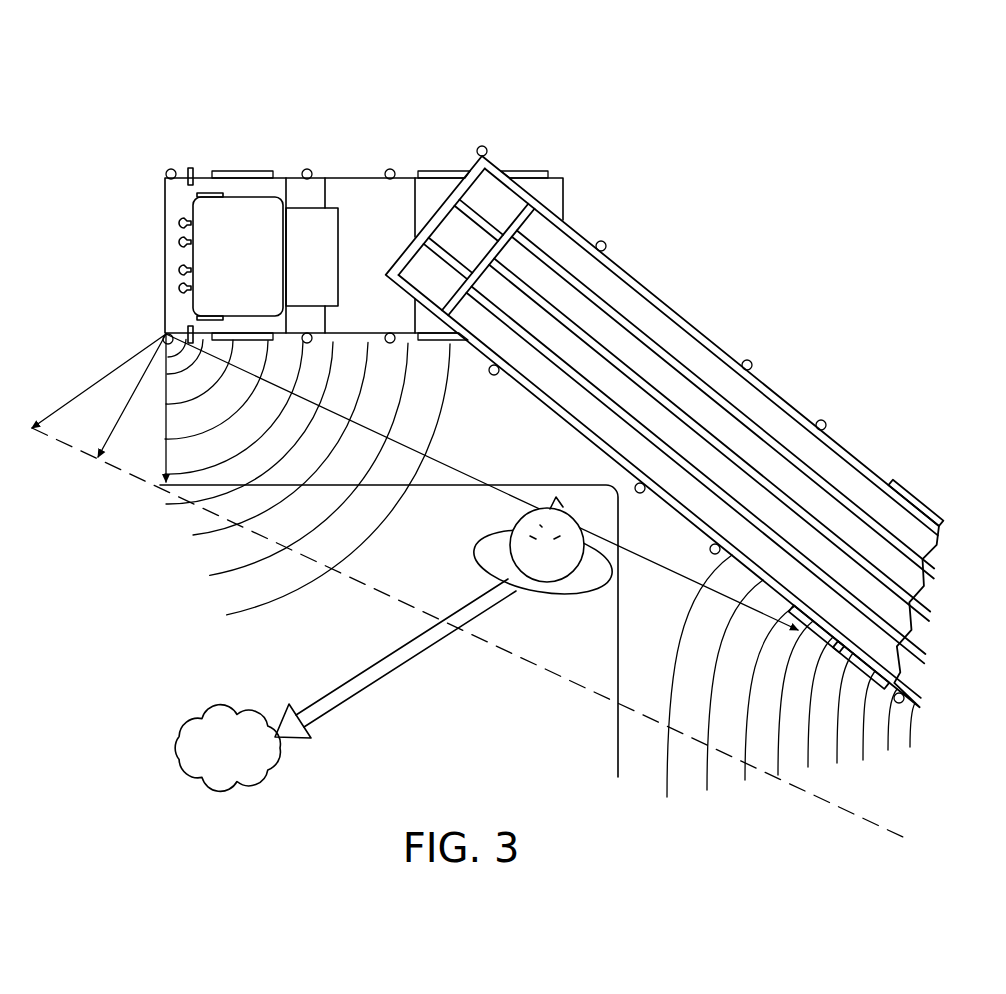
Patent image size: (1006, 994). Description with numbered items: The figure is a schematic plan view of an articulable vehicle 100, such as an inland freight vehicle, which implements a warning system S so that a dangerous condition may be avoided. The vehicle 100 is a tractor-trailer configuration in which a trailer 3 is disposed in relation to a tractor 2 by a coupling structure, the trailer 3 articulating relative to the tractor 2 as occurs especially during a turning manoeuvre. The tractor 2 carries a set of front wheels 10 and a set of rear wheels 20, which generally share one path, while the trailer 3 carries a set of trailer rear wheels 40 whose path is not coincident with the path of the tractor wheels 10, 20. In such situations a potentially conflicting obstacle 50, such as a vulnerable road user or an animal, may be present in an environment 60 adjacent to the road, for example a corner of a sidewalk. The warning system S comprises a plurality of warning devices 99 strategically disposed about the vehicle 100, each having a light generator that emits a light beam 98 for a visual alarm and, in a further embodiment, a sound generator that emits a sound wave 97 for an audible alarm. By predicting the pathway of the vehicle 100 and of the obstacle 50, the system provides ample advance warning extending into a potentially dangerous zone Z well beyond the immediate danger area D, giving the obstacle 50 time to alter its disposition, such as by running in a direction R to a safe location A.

The tractor 2 is at (570, 122).
The trailer 3 is at (696, 465).
The front wheels 10 is at (236, 169).
The rear wheels 20 is at (432, 170).
The trailer rear wheels 40 is at (865, 659).
The obstacle 50 is at (577, 600).
The environment 60 is at (546, 485).
The sound wave 97 is at (198, 376).
The light beam 98 is at (87, 381).
The warning device 99 is at (171, 168).
The articulable vehicle 100 is at (163, 243).
The warning system S is at (611, 188).
The immediate danger area D is at (453, 448).
The potentially dangerous zone Z is at (388, 568).
The direction R is at (383, 682).
The safe location A is at (230, 785).